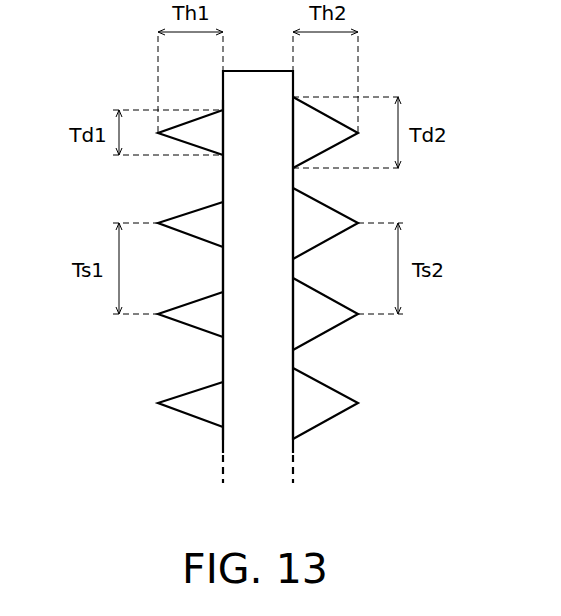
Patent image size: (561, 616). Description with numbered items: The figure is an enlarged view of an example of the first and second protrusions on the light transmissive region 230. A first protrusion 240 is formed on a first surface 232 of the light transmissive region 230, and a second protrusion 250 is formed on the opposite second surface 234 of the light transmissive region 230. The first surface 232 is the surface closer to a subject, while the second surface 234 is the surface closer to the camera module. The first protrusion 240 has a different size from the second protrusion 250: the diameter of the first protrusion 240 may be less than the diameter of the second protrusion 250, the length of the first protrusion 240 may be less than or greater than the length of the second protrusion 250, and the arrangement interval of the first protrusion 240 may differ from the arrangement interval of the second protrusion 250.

The light transmissive region 230 is at (260, 458).
The first surface 232 is at (222, 446).
The second surface 234 is at (294, 446).
The first protrusion 240 is at (190, 390).
The second protrusion 250 is at (325, 385).